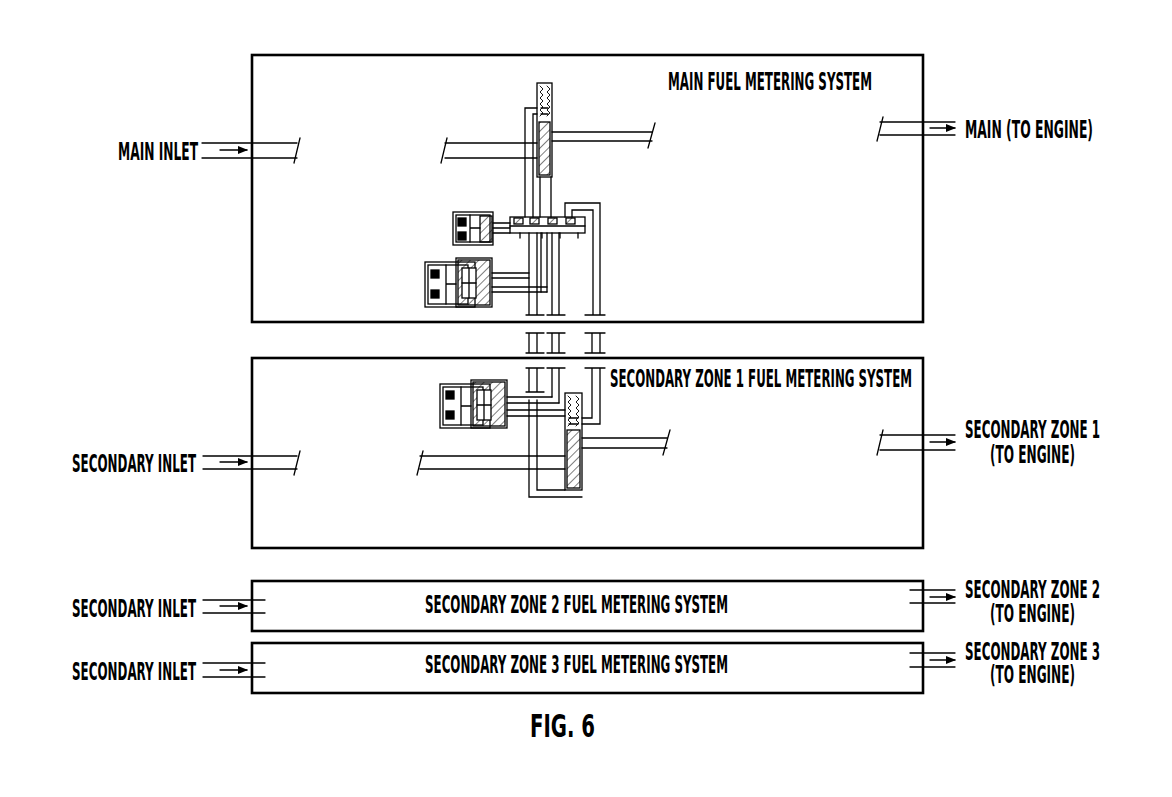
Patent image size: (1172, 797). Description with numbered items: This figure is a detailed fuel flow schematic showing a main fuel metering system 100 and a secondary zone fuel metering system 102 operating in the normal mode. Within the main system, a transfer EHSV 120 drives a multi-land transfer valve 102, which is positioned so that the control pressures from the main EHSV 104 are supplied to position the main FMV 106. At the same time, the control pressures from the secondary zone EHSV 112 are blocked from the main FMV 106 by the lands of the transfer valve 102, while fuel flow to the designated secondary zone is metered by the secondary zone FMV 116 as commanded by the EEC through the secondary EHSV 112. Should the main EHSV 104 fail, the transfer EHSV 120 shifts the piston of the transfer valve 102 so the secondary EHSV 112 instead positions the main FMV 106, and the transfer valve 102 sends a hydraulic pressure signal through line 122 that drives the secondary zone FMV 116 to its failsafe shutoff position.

The main fuel metering system 100 is at (697, 55).
The transfer valve 102 is at (557, 217).
The main EHSV 104 is at (425, 290).
The main FMV 106 is at (537, 84).
The secondary zone EHSV 112 is at (440, 384).
The secondary zone FMV 116 is at (583, 475).
The transfer EHSV 120 is at (453, 232).
The line 122 is at (600, 283).